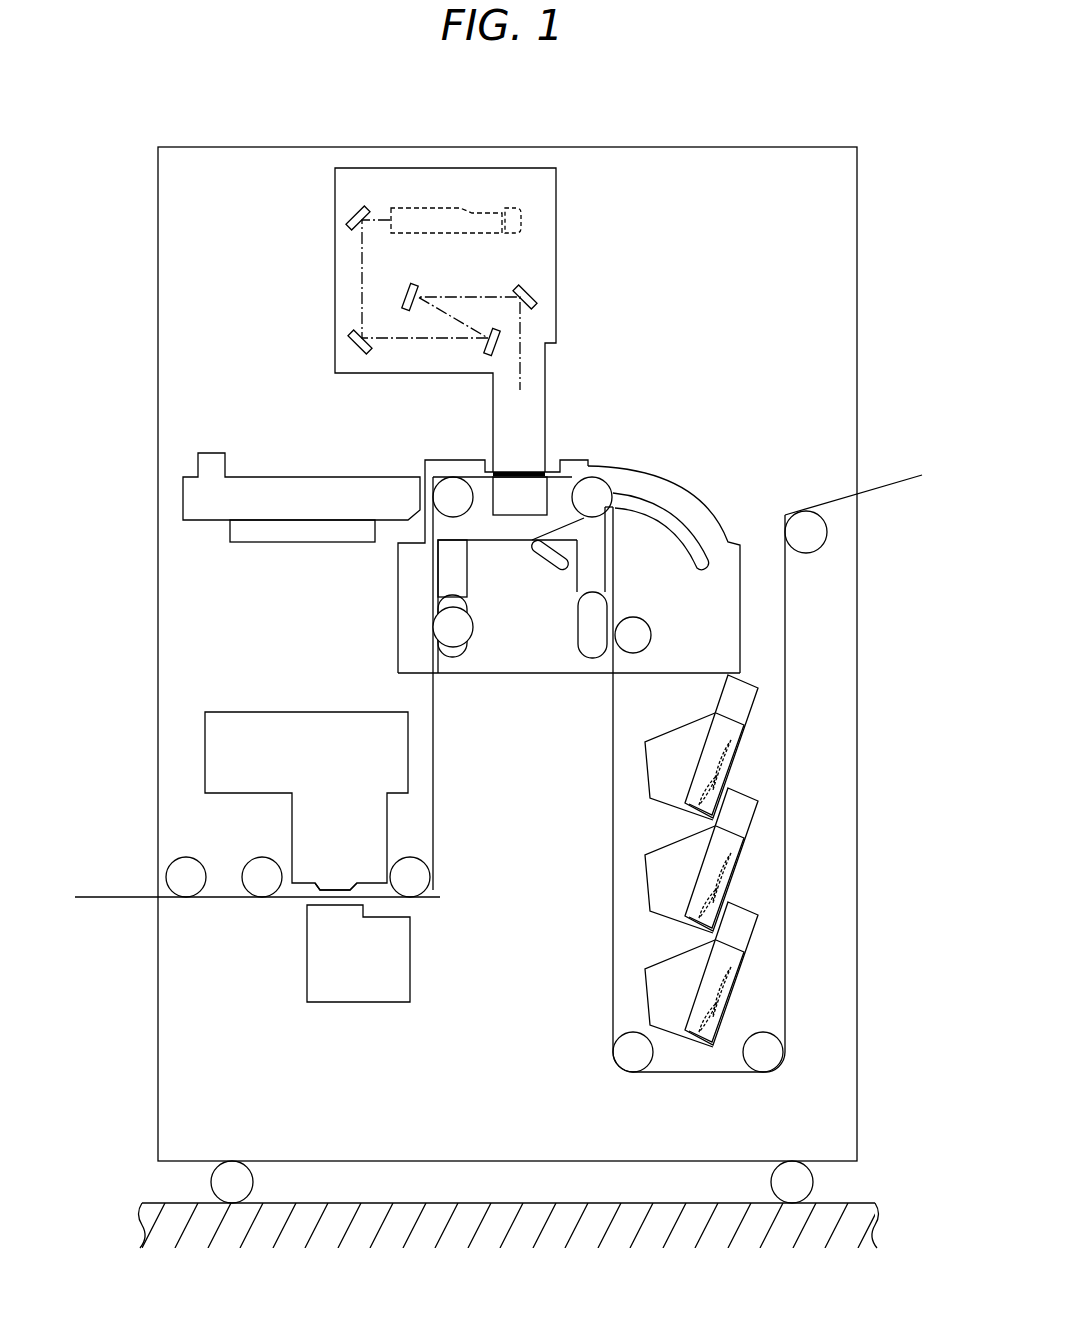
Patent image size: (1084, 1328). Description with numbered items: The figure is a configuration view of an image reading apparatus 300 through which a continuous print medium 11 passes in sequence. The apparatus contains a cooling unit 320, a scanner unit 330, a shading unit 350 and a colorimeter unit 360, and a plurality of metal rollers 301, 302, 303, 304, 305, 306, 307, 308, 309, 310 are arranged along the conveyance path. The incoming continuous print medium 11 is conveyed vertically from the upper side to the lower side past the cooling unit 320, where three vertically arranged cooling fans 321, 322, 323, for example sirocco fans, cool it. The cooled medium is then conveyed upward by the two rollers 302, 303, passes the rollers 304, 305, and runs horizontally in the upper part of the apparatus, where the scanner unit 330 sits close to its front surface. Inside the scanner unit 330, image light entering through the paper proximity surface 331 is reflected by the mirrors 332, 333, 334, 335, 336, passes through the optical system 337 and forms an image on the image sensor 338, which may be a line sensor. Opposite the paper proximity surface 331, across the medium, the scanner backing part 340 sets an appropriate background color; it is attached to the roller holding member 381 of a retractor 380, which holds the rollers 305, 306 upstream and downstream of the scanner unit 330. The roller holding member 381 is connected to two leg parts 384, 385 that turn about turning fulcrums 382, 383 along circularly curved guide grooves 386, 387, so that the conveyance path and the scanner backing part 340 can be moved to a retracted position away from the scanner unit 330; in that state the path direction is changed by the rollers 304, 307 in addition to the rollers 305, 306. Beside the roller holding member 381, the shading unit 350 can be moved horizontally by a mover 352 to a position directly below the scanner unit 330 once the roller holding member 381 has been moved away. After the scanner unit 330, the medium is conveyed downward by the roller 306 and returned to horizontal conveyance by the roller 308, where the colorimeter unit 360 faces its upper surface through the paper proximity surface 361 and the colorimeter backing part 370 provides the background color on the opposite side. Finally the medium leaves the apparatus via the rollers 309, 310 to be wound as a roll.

The image reading apparatus 300 is at (700, 147).
The continuous print medium 11 is at (902, 480).
The scanner unit 330 is at (488, 168).
The paper proximity surface 331 is at (533, 470).
The mirror 332 is at (535, 300).
The mirror 333 is at (402, 290).
The mirror 334 is at (500, 345).
The mirror 335 is at (352, 345).
The mirror 336 is at (365, 205).
The optical system 337 is at (435, 208).
The image sensor 338 is at (515, 208).
The scanner backing part 340 is at (512, 496).
The roller 305 is at (600, 481).
The roller 306 is at (452, 477).
The roller 307 is at (448, 627).
The roller 304 is at (652, 635).
The roller 301 is at (812, 553).
The roller 302 is at (763, 1072).
The roller 303 is at (631, 1072).
The roller 308 is at (420, 888).
The roller 309 is at (258, 858).
The roller 310 is at (183, 858).
The retractor 380 is at (722, 508).
The roller holding member 381 is at (534, 548).
The turning fulcrum 382 is at (443, 655).
The turning fulcrum 383 is at (580, 656).
The leg part 384 is at (468, 567).
The leg part 385 is at (578, 600).
The guide groove 386 is at (571, 540).
The guide groove 387 is at (667, 507).
The shading unit 350 is at (262, 477).
The mover 352 is at (300, 543).
The colorimeter unit 360 is at (215, 712).
The paper proximity surface 361 is at (350, 885).
The colorimeter backing part 370 is at (365, 1003).
The cooling unit 320 is at (637, 861).
The cooling fan 321 is at (645, 748).
The cooling fan 322 is at (645, 860).
The cooling fan 323 is at (645, 972).